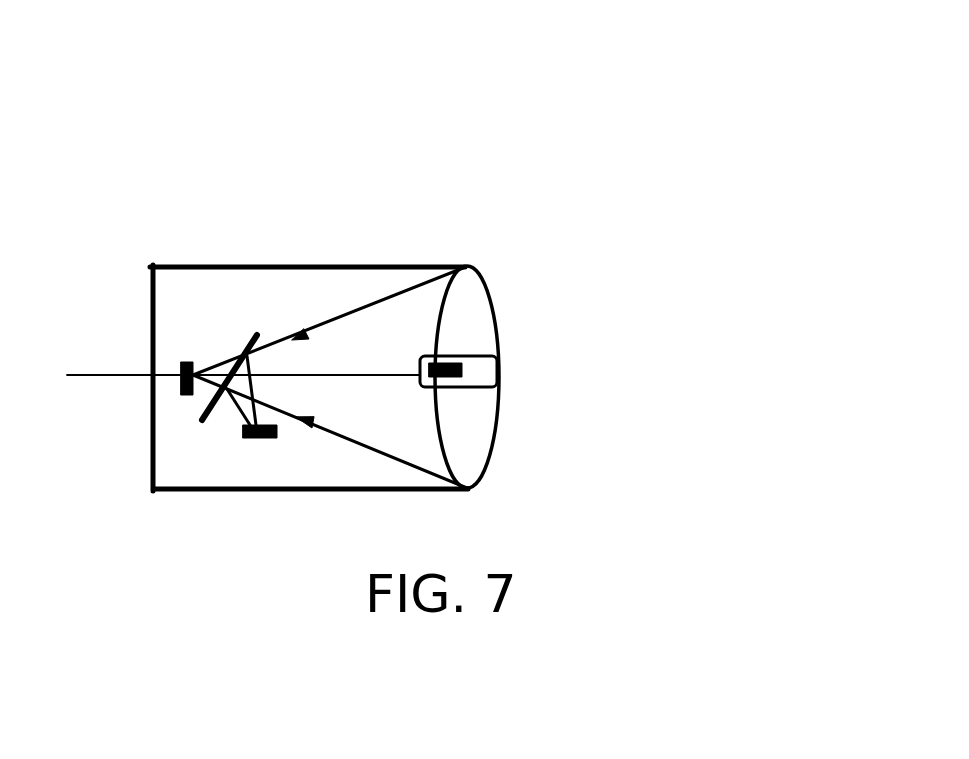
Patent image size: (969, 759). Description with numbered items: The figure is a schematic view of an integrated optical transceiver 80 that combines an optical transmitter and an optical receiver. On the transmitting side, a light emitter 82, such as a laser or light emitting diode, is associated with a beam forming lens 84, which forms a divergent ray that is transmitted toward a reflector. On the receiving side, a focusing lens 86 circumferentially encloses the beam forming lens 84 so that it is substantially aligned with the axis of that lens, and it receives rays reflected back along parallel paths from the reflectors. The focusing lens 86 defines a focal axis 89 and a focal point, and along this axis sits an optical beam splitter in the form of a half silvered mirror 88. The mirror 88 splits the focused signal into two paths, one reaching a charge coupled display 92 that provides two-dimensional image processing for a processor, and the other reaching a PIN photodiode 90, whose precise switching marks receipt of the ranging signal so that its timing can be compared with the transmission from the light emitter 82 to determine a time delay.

The integrated optical transceiver 80 is at (652, 176).
The light emitter 82 is at (457, 363).
The beam forming lens 84 is at (497, 373).
The focusing lens 86 is at (472, 300).
The half silvered mirror 88 is at (250, 352).
The optical axis 89 is at (377, 375).
The PIN photodiode 90 is at (253, 440).
The charge coupled display 92 is at (153, 377).